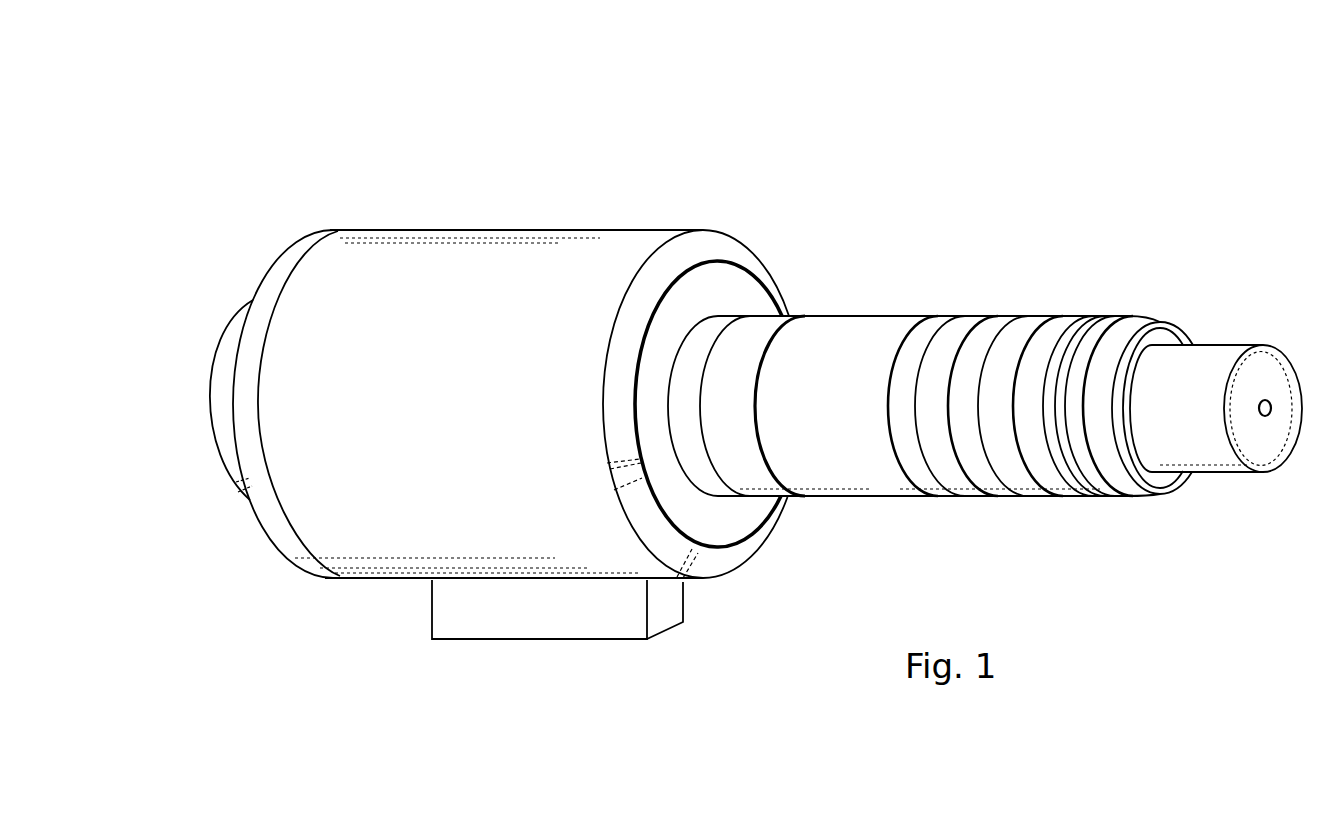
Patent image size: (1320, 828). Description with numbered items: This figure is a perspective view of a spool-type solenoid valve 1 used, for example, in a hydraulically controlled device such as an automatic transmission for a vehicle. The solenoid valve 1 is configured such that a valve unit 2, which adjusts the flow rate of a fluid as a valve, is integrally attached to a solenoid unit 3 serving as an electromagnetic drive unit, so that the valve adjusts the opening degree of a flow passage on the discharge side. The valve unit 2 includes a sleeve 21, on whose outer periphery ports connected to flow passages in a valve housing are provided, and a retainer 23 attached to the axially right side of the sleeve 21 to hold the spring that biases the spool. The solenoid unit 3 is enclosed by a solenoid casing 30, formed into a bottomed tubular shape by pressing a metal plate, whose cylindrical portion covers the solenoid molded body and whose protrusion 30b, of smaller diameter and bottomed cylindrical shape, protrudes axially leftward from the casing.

The solenoid valve 1 is at (702, 346).
The valve unit 2 is at (985, 351).
The sleeve 21 is at (840, 343).
The retainer 23 is at (1198, 358).
The solenoid unit 3 is at (445, 346).
The solenoid casing 30 is at (468, 222).
The protrusion 30b is at (215, 406).